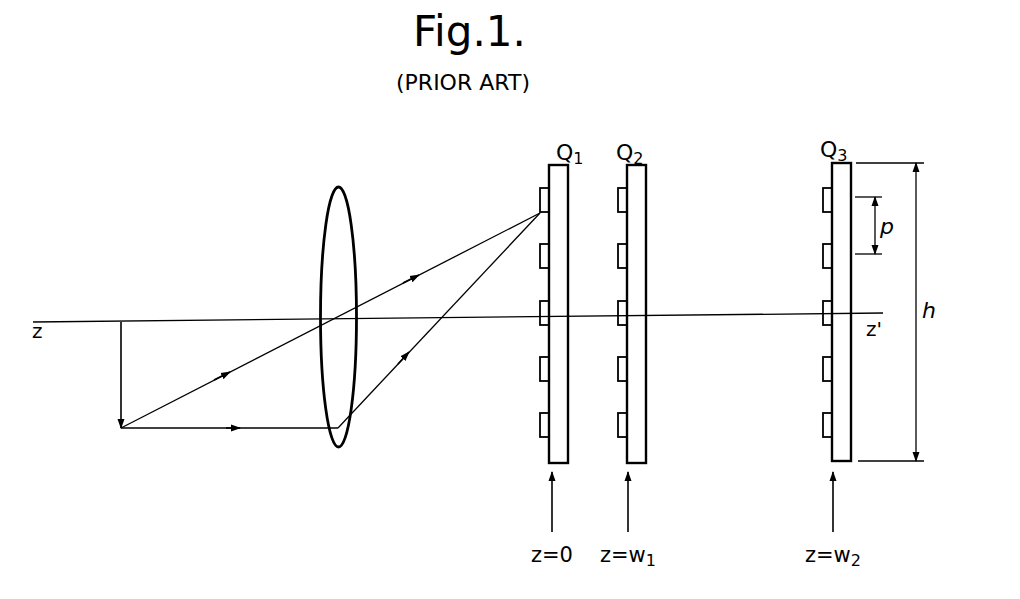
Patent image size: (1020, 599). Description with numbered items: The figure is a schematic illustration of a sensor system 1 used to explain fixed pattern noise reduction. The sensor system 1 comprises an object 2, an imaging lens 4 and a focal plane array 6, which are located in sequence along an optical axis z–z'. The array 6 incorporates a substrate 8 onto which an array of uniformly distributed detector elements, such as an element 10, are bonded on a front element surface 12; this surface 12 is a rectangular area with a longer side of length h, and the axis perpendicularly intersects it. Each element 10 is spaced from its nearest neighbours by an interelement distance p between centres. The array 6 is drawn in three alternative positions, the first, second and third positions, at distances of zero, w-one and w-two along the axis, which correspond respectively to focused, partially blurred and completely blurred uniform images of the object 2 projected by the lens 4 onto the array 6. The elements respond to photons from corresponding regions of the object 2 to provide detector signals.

The sensor system 1 is at (258, 235).
The object 2 is at (121, 378).
The imaging lens 4 is at (330, 204).
The focal plane array 6 is at (517, 302).
The substrate 8 is at (556, 180).
The detector element 10 is at (540, 375).
The front element surface 12 is at (548, 452).